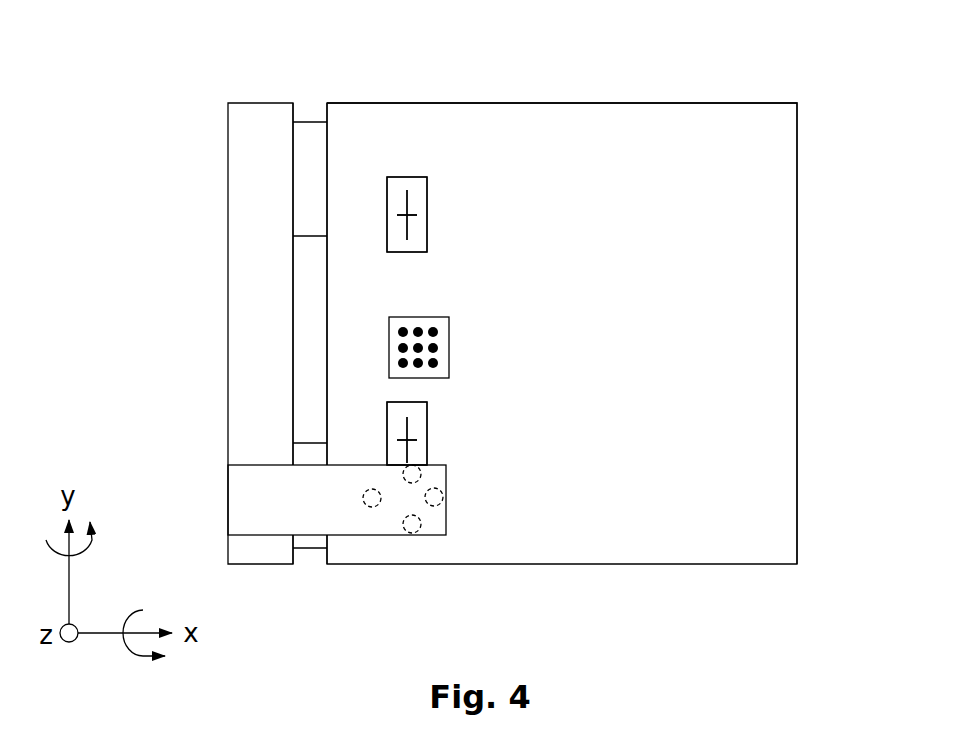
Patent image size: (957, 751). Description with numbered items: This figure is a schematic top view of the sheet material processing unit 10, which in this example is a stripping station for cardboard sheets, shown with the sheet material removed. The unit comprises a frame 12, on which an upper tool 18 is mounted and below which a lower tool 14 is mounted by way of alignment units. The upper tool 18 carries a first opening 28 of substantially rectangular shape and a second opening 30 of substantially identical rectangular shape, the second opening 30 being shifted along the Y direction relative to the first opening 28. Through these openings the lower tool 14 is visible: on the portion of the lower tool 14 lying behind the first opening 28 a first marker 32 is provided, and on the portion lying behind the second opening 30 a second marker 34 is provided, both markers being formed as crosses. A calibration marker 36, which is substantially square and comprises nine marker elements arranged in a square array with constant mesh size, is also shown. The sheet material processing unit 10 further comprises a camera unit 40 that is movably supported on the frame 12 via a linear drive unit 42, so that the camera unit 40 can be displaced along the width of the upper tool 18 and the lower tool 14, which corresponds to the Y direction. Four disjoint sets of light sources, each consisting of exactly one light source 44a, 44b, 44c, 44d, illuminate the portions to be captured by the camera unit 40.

The sheet material processing unit 10 is at (719, 97).
The frame 12 is at (307, 130).
The lower tool 14 is at (391, 184).
The upper tool 18 is at (781, 169).
The first opening 28 is at (428, 446).
The second opening 30 is at (428, 232).
The first marker 32 is at (429, 418).
The second marker 34 is at (426, 177).
The calibration marker 36 is at (450, 355).
The camera unit 40 is at (257, 498).
The linear drive unit 42 is at (243, 163).
The light source 44a is at (425, 478).
The light source 44b is at (372, 509).
The light source 44c is at (444, 502).
The light source 44d is at (418, 532).